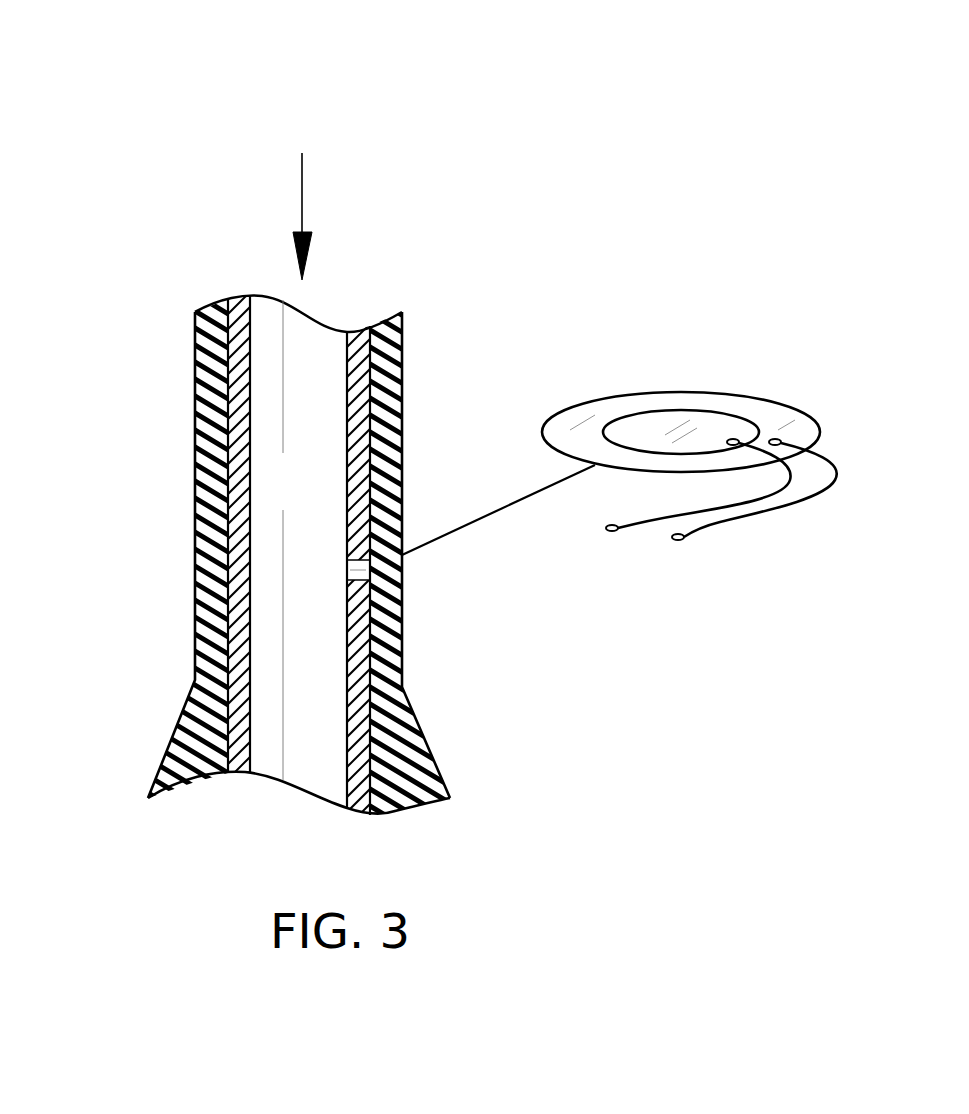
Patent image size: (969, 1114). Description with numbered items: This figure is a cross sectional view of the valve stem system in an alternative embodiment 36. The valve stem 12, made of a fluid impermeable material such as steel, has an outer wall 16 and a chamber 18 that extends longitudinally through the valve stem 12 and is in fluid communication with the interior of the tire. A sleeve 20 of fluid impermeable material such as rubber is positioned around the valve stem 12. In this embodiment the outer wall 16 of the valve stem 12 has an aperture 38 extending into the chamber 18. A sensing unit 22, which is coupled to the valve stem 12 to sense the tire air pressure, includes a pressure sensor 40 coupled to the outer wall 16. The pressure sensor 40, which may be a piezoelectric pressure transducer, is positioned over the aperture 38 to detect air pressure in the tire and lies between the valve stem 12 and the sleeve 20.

The valve stem 12 is at (402, 368).
The outer wall 16 is at (228, 413).
The chamber 18 is at (267, 305).
The sleeve 20 is at (195, 512).
The sensing unit 22 is at (751, 330).
The alternative embodiment 36 is at (356, 85).
The aperture 38 is at (352, 577).
The pressure sensor 40 is at (373, 625).